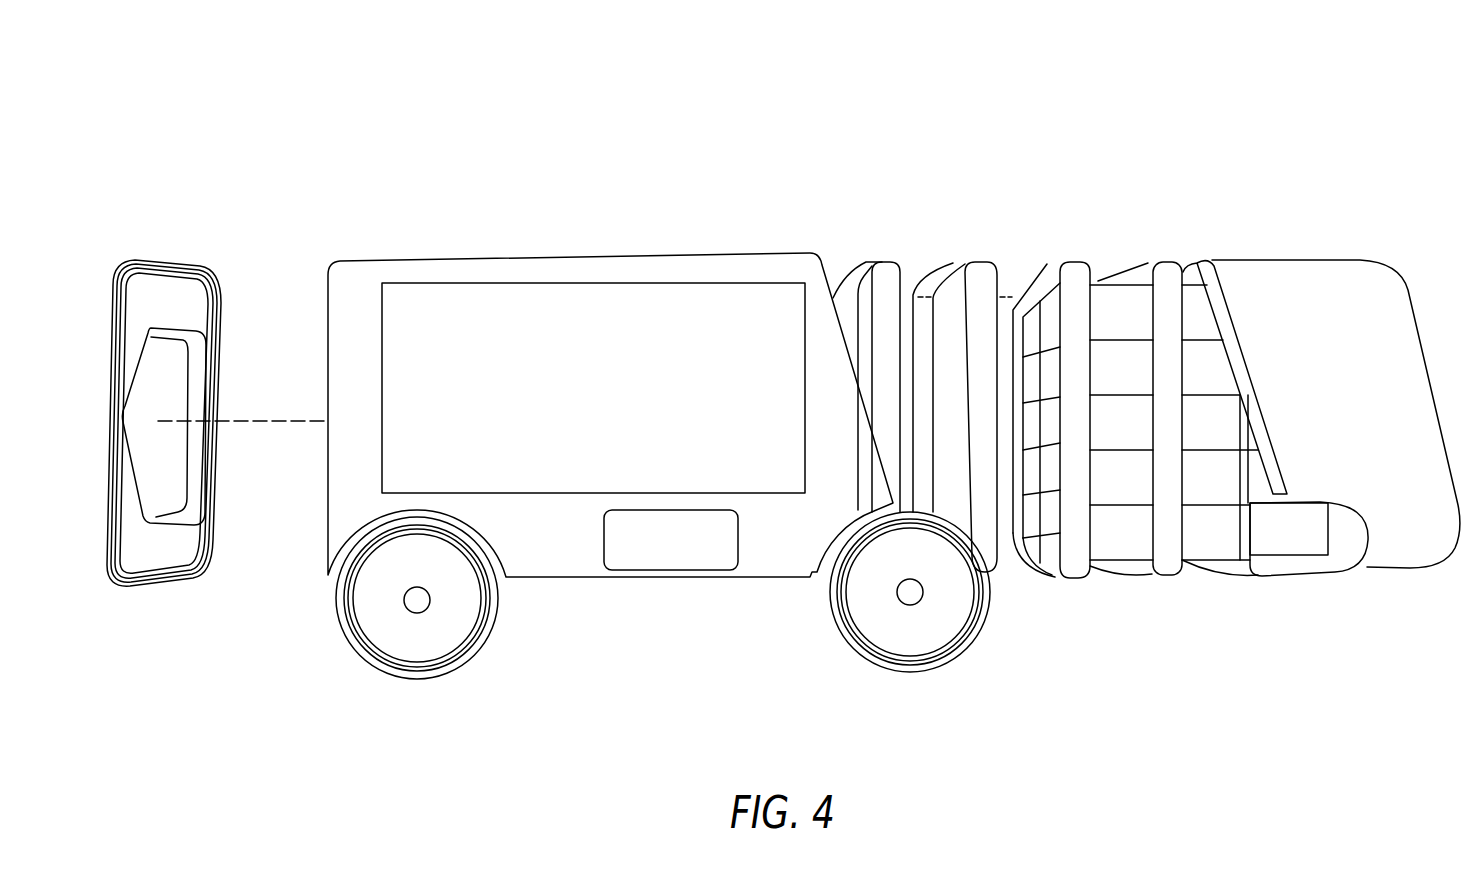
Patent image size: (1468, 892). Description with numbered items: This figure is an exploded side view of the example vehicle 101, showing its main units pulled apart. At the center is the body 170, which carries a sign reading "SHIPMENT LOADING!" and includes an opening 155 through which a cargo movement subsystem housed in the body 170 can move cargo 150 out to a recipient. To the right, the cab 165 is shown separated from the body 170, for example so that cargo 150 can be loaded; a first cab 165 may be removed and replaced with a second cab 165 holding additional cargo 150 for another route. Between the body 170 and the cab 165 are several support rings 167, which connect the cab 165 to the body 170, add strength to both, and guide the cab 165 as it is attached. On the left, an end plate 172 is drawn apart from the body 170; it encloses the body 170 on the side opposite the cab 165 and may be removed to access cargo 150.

The vehicle 101 is at (248, 118).
The body 170 is at (568, 272).
The support rings 167 is at (1157, 263).
The cab 165 is at (1273, 268).
The cargo 150 is at (1112, 545).
The opening 155 is at (666, 548).
The end plate 172 is at (163, 586).